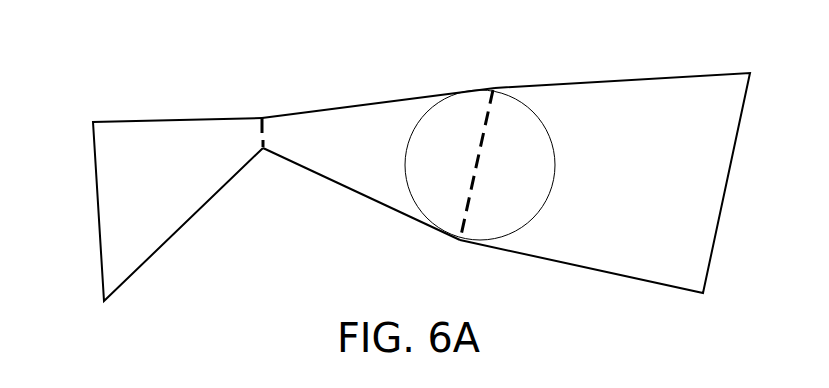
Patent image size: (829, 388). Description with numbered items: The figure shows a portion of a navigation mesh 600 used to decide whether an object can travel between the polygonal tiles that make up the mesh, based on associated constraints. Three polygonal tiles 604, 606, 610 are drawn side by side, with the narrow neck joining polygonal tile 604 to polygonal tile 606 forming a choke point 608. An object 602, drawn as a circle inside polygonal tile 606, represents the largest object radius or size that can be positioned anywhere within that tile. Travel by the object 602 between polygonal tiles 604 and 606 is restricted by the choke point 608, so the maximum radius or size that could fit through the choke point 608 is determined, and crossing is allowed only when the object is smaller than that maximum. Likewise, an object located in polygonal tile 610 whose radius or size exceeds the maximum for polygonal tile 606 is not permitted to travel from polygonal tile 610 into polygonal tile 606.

The navigation mesh 600 is at (140, 55).
The object 602 is at (528, 108).
The polygonal tile 604 is at (164, 186).
The polygonal tile 606 is at (359, 154).
The choke point 608 is at (263, 178).
The polygonal tile 610 is at (654, 188).